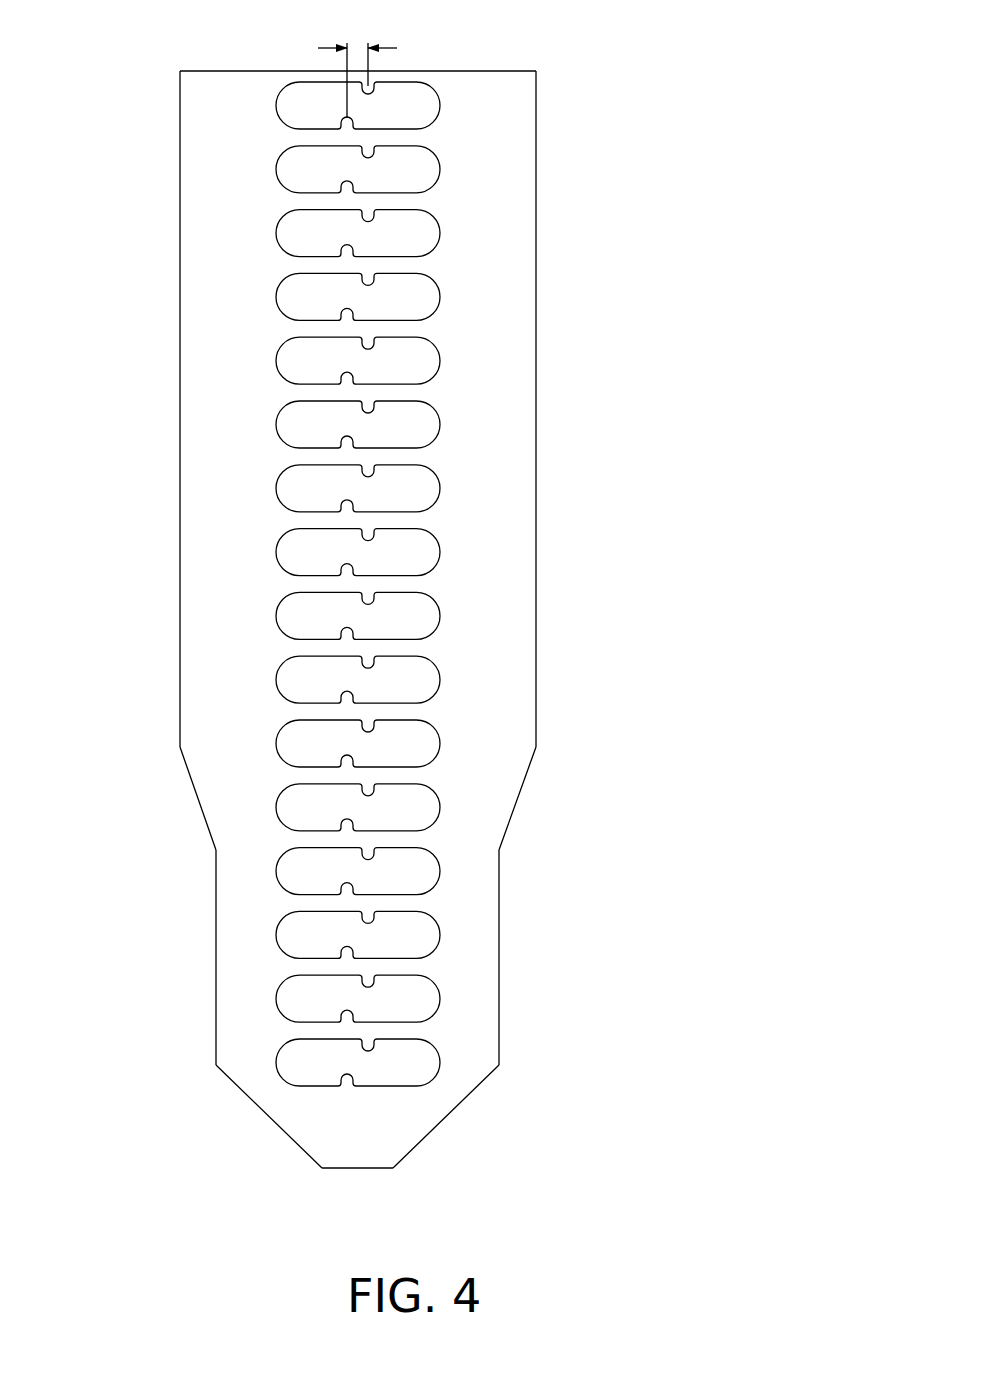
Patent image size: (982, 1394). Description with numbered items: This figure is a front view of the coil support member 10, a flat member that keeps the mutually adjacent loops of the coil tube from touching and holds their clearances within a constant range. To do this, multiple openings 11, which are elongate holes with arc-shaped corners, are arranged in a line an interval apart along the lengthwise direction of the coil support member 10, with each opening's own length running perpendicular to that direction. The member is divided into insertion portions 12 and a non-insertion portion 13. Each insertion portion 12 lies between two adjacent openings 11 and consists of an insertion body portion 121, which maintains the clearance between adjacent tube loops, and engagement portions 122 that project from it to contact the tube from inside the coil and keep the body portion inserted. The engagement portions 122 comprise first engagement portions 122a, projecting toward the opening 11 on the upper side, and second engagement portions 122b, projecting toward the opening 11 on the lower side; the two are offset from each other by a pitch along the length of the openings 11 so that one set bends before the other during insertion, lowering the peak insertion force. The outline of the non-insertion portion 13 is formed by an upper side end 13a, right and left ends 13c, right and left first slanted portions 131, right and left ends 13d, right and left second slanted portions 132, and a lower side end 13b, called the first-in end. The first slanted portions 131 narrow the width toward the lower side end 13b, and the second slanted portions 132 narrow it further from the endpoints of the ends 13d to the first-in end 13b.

The coil support member 10 is at (428, 617).
The openings 11 is at (398, 575).
The insertion portions 12 is at (530, 430).
The insertion body portions 121 is at (398, 522).
The engagement portions 122 is at (504, 392).
The first engagement portions 122a is at (361, 373).
The second engagement portions 122b is at (382, 413).
The non-insertion portion 13 is at (360, 617).
The upper side end 13a is at (237, 70).
The lower side end 13b is at (357, 1168).
The right and left ends 13c is at (537, 250).
The right and left ends 13d is at (499, 962).
The first slanted portions 131 is at (520, 793).
The second slanted portions 132 is at (459, 1103).